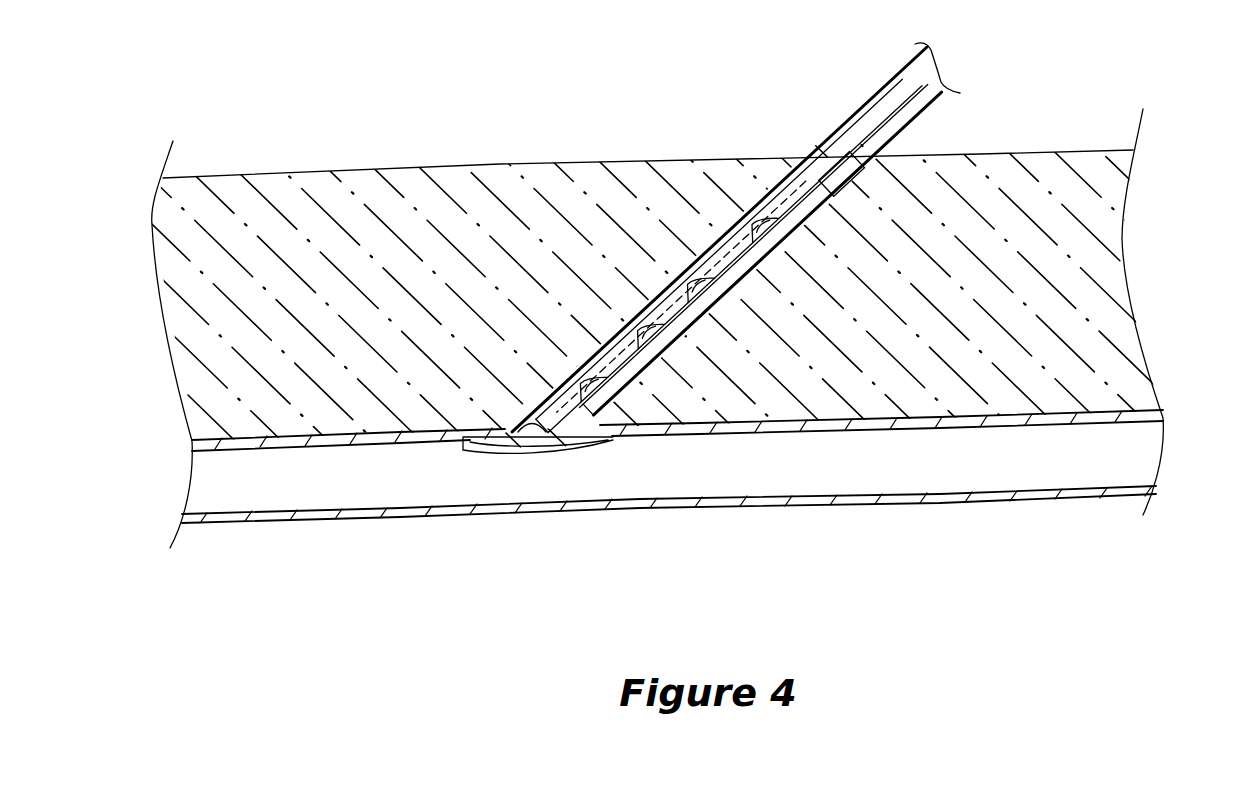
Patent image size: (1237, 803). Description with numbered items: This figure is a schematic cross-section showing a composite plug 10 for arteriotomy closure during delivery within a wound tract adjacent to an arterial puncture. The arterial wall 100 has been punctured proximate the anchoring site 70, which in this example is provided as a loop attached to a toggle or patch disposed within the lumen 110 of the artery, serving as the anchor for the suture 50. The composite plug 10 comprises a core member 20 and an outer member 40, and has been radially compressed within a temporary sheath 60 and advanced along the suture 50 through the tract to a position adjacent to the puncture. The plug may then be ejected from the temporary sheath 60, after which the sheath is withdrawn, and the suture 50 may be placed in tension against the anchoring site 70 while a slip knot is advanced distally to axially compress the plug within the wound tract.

The composite plug 10 is at (751, 302).
The core member 20 is at (608, 443).
The outer member 40 is at (802, 183).
The suture 50 is at (897, 102).
The temporary sheath 60 is at (923, 113).
The anchoring site 70 is at (533, 432).
The arterial wall 100 is at (1027, 496).
The lumen 110 is at (1133, 454).